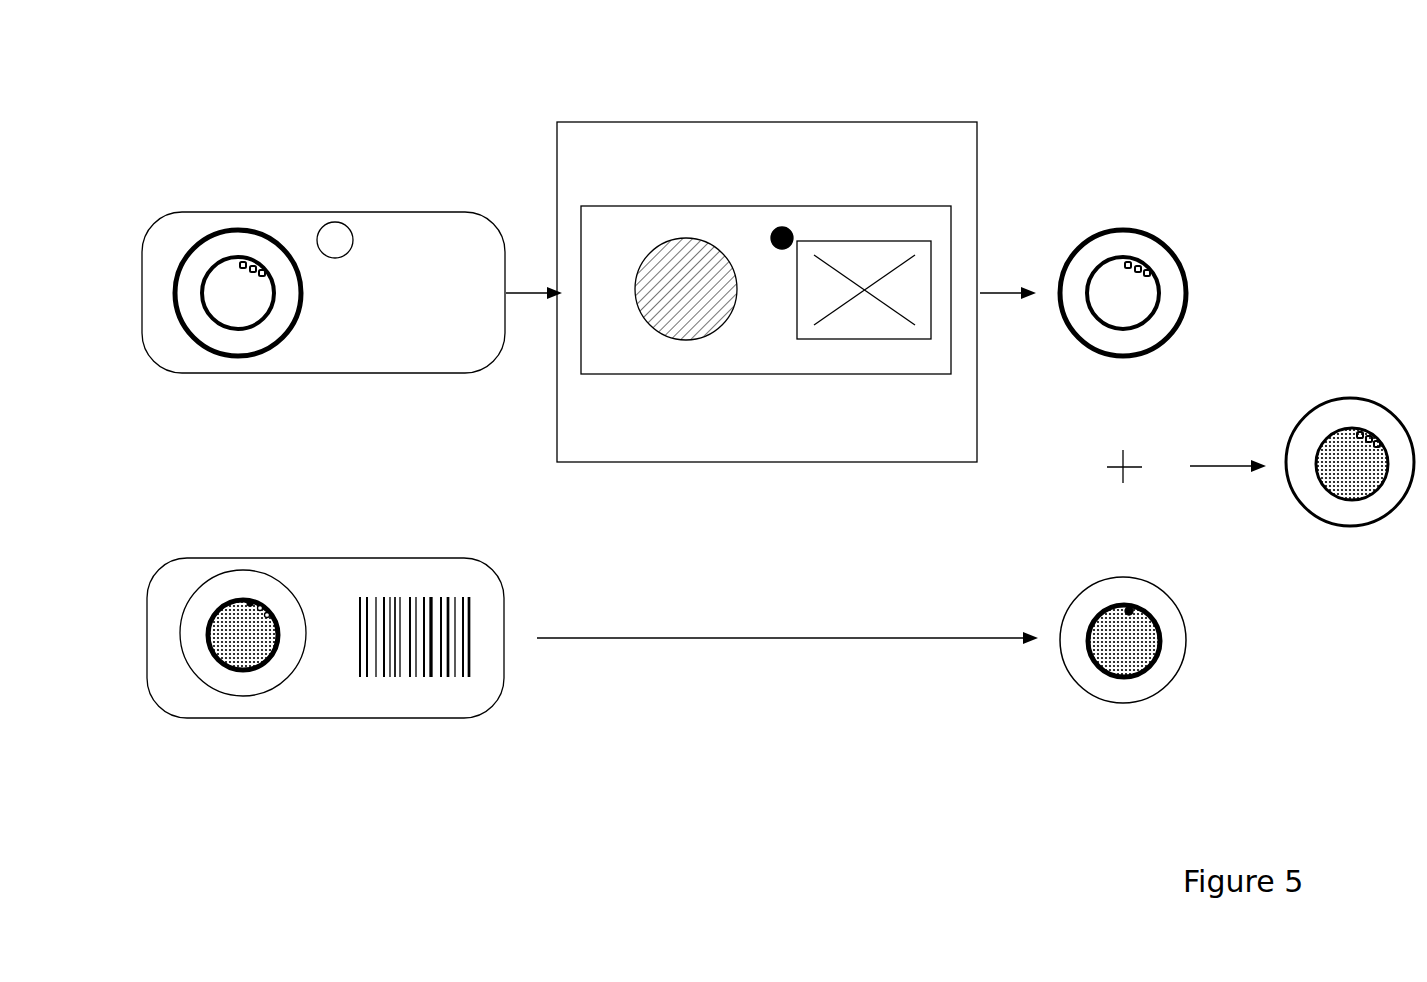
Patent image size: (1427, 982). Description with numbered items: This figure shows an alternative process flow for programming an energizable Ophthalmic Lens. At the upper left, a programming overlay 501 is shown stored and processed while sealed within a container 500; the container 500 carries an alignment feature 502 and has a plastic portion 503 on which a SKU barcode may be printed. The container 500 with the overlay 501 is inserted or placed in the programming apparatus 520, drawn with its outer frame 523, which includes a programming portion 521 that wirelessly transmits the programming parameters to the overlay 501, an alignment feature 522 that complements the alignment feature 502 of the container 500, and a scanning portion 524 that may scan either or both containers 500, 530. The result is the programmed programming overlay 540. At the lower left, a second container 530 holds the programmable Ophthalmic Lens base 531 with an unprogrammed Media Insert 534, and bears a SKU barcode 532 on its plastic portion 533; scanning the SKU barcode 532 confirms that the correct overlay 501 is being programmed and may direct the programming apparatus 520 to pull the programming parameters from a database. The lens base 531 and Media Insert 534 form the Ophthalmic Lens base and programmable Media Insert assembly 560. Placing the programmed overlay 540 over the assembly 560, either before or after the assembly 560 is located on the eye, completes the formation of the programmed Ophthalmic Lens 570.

The container 500 is at (323, 260).
The programming overlay 501 is at (231, 240).
The alignment feature 502 is at (334, 185).
The plastic portion 503 is at (412, 240).
The programming apparatus 520 is at (790, 273).
The programming portion 521 is at (675, 240).
The alignment feature 522 is at (781, 226).
The outer frame 523 is at (960, 122).
The scanning portion 524 is at (868, 258).
The container 530 is at (374, 648).
The Ophthalmic Lens base 531 is at (290, 617).
The SKU barcode 532 is at (411, 597).
The plastic portion 533 is at (485, 585).
The Media Insert 534 is at (227, 600).
The programmed programming overlay 540 is at (1123, 329).
The Ophthalmic Lens base and programmable Media Insert assembly 560 is at (1123, 682).
The programmed Ophthalmic Lens 570 is at (1350, 486).